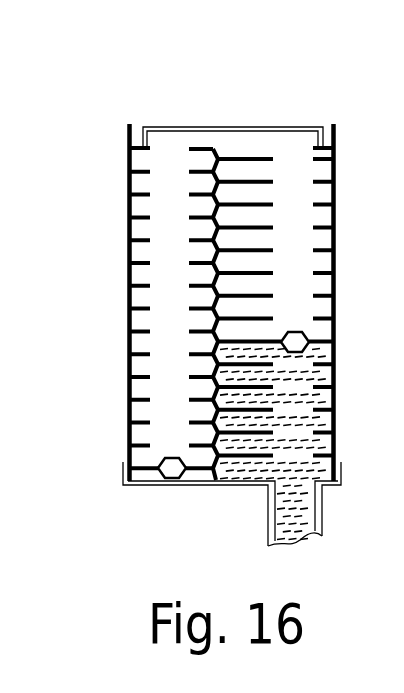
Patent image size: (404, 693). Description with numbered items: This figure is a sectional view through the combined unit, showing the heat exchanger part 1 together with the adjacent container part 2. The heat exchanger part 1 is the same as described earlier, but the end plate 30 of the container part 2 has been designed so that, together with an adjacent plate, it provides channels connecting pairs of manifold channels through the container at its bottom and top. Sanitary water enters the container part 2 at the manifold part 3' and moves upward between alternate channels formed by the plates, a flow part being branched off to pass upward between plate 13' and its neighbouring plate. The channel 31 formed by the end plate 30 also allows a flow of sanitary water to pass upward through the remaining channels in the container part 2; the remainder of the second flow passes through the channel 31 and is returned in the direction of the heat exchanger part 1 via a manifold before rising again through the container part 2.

The heat exchanger part 1 is at (82, 343).
The container part 2 is at (82, 113).
The manifold part 3' is at (240, 308).
The plate 13' is at (306, 260).
The end plate 30 is at (262, 127).
The channel 31 is at (207, 138).